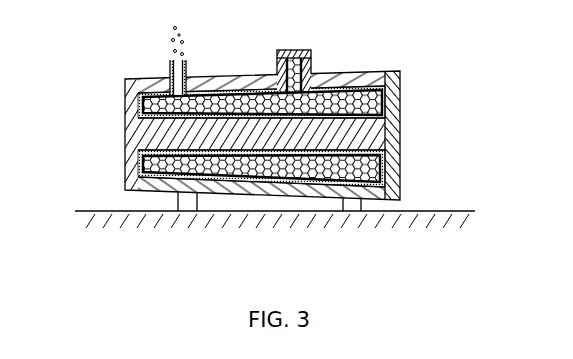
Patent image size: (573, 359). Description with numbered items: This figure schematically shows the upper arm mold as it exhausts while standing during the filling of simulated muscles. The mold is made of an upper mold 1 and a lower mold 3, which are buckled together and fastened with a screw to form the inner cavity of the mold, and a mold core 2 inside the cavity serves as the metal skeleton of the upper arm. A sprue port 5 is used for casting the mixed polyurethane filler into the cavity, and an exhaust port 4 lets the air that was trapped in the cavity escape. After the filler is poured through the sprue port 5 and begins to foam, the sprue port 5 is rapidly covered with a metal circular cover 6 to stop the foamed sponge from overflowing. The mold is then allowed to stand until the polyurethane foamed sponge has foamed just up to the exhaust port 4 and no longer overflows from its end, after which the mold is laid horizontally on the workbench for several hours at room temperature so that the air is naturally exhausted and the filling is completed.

The upper mold 1 is at (388, 93).
The mold core 2 is at (387, 130).
The lower mold 3 is at (387, 183).
The exhaust port 4 is at (170, 68).
The sprue port 5 is at (301, 66).
The metal circular cover 6 is at (285, 50).